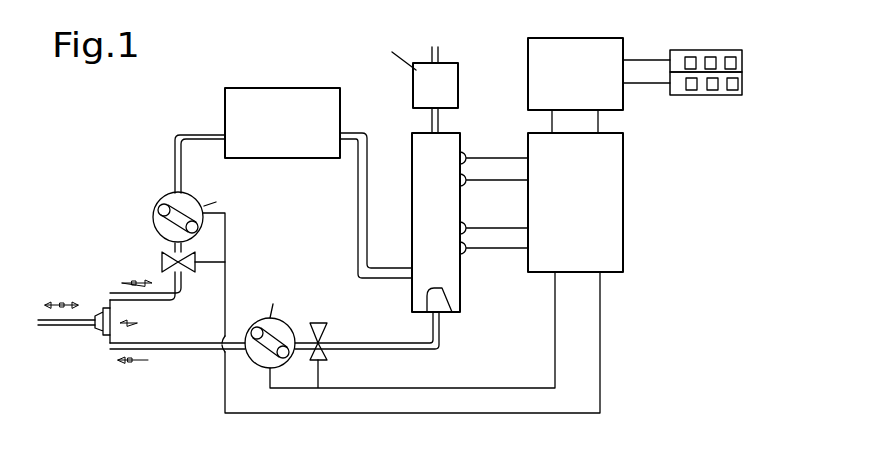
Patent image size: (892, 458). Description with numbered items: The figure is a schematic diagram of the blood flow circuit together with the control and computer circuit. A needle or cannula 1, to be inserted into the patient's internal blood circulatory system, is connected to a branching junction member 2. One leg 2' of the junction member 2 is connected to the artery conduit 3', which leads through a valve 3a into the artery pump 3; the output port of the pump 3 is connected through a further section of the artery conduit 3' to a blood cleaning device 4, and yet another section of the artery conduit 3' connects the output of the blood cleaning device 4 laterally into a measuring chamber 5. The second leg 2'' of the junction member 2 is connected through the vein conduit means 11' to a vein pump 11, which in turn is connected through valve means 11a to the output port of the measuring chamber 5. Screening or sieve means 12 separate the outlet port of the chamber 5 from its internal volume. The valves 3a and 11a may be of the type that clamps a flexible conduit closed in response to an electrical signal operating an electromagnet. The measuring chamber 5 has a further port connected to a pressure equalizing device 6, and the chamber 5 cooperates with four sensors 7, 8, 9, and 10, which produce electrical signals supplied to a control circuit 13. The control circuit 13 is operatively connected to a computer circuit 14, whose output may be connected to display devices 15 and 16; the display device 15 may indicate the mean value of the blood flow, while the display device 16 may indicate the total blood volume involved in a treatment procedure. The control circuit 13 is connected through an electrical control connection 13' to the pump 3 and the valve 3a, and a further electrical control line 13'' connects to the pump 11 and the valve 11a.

The needle or cannula 1 is at (52, 322).
The branching junction member 2 is at (124, 324).
The leg of the junction member 2' is at (113, 273).
The second leg of the junction member 2'' is at (111, 348).
The artery pump 3 is at (193, 215).
The artery conduit 3' is at (261, 226).
The valve 3a is at (160, 260).
The blood cleaning device 4 is at (243, 92).
The measuring chamber 5 is at (418, 190).
The pressure equalizing device 6 is at (457, 95).
The sensor 7 is at (470, 250).
The sensor 8 is at (470, 227).
The sensor 9 is at (470, 182).
The sensor 10 is at (470, 155).
The vein pump 11 is at (273, 341).
The vein conduit means 11' is at (274, 348).
The valve means 11a is at (330, 326).
The screening or sieve means 12 is at (447, 296).
The control circuit 13 is at (594, 202).
The electrical control connection 13' is at (416, 313).
The electrical control line 13'' is at (412, 330).
The computer circuit 14 is at (610, 42).
The display device 15 is at (700, 55).
The display device 16 is at (702, 90).